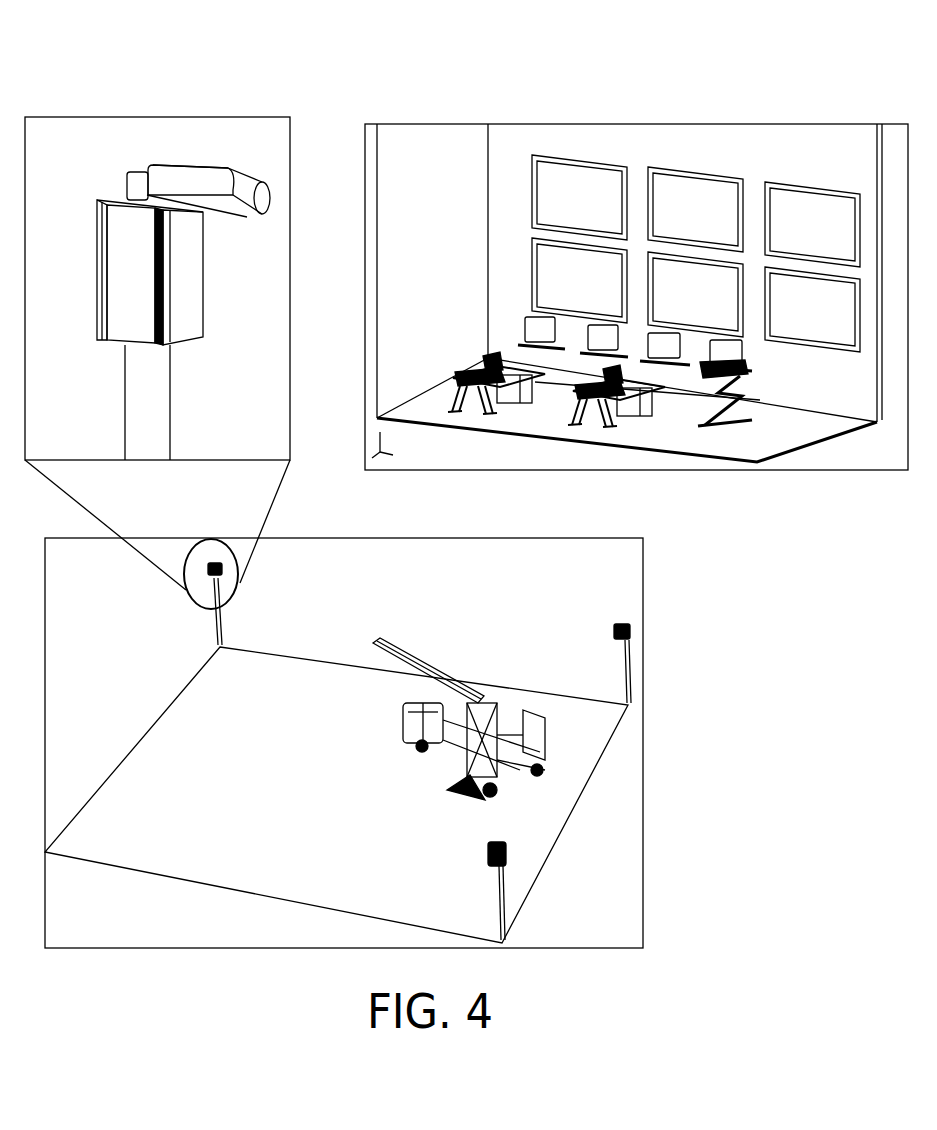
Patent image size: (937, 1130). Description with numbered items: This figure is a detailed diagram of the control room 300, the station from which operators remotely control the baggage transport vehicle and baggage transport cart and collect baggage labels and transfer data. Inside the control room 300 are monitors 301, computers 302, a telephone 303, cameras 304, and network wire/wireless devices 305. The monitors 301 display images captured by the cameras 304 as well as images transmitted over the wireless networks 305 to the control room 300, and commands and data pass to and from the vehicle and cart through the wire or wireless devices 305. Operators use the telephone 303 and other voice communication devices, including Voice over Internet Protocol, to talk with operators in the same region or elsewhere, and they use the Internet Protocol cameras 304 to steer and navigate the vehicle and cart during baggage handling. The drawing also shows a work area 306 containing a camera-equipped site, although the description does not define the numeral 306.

The control room 300 is at (463, 124).
The monitors 301 is at (558, 182).
The computers 302 is at (592, 281).
The telephone 303 is at (574, 353).
The cameras 304 is at (503, 843).
The network wire/wireless devices 305 is at (364, 451).
The work site floor 306 is at (145, 782).